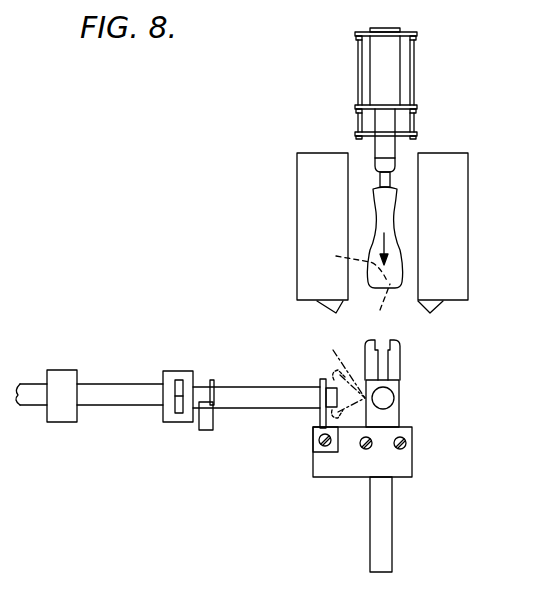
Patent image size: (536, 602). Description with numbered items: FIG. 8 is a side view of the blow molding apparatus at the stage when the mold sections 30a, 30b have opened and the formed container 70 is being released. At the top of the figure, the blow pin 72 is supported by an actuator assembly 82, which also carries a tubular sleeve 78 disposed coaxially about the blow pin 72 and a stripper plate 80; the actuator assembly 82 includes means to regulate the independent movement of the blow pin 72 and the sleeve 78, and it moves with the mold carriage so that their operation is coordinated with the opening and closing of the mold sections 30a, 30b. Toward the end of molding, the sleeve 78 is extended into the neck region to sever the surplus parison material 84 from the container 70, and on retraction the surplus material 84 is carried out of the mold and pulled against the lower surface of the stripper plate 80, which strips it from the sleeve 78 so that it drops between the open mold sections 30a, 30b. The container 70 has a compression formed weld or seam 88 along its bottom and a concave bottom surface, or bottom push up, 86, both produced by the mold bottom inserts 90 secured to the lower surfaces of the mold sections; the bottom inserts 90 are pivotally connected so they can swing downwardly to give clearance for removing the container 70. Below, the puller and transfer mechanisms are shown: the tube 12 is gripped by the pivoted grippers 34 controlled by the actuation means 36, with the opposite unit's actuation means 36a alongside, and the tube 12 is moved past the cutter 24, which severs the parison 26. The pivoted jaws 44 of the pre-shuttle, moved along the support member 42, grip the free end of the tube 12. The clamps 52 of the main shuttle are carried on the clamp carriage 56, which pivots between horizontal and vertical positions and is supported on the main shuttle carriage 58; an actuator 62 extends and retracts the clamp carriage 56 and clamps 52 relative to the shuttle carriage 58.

The tube 12 is at (133, 388).
The cutter 24 is at (207, 430).
The parison 26 is at (245, 387).
The mold section 30a is at (297, 198).
The mold section 30b is at (462, 198).
The pivoted grippers 34 is at (177, 398).
The actuation means 36 is at (181, 370).
The actuation means 36a is at (65, 372).
The support member 42 is at (317, 443).
The pivoted jaws 44 is at (318, 392).
The clamps 52 is at (426, 363).
The clamp carriage 56 is at (397, 415).
The main shuttle carriage 58 is at (323, 472).
The actuator 62 is at (390, 502).
The formed container 70 is at (372, 230).
The blow pin 72 is at (392, 174).
The tubular sleeve 78 is at (388, 122).
The stripper plate 80 is at (367, 130).
The actuator assembly 82 is at (446, 70).
The surplus parison material 84 is at (373, 163).
The concave bottom surface 86 is at (348, 263).
The weld or seam 88 is at (372, 305).
The mold bottom inserts 90 is at (333, 305).